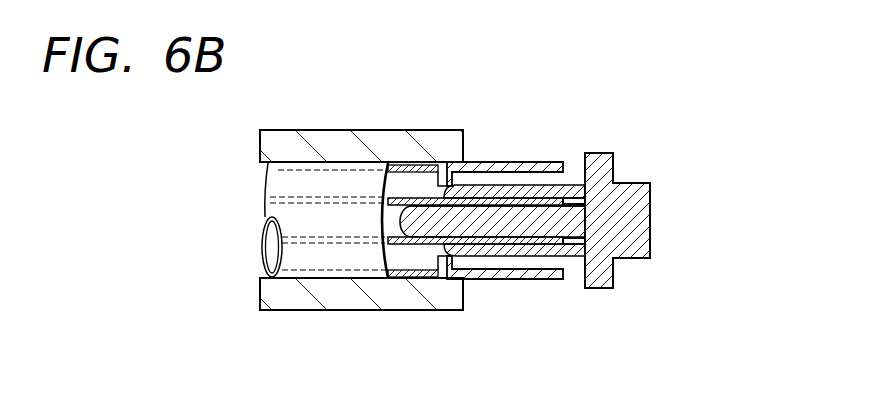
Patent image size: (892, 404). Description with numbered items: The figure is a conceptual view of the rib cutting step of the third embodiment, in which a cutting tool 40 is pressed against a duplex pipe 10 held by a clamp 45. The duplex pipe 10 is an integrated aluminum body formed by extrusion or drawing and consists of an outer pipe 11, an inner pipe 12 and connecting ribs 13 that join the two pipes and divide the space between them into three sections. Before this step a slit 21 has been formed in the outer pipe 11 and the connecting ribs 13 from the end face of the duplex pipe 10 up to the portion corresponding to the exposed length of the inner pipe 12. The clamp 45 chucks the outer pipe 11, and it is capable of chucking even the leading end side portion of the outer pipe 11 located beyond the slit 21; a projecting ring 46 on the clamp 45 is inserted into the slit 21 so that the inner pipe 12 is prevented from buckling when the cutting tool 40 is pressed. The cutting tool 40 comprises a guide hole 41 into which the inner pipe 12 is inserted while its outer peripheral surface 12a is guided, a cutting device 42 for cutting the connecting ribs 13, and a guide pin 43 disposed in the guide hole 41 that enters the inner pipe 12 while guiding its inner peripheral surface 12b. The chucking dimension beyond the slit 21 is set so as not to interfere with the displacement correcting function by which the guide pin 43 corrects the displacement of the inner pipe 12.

The duplex pipe 10 is at (284, 182).
The outer pipe 11 is at (557, 279).
The inner pipe 12 is at (527, 241).
The outer peripheral surface 12a is at (546, 197).
The inner peripheral surface 12b is at (510, 205).
The connecting ribs 13 is at (473, 190).
The slit 21 is at (444, 197).
The cutting tool 40 is at (650, 176).
The guide hole 41 is at (589, 192).
The cutting device 42 is at (487, 167).
The guide pin 43 is at (397, 166).
The clamp 45 is at (287, 133).
The projecting ring 46 is at (437, 168).